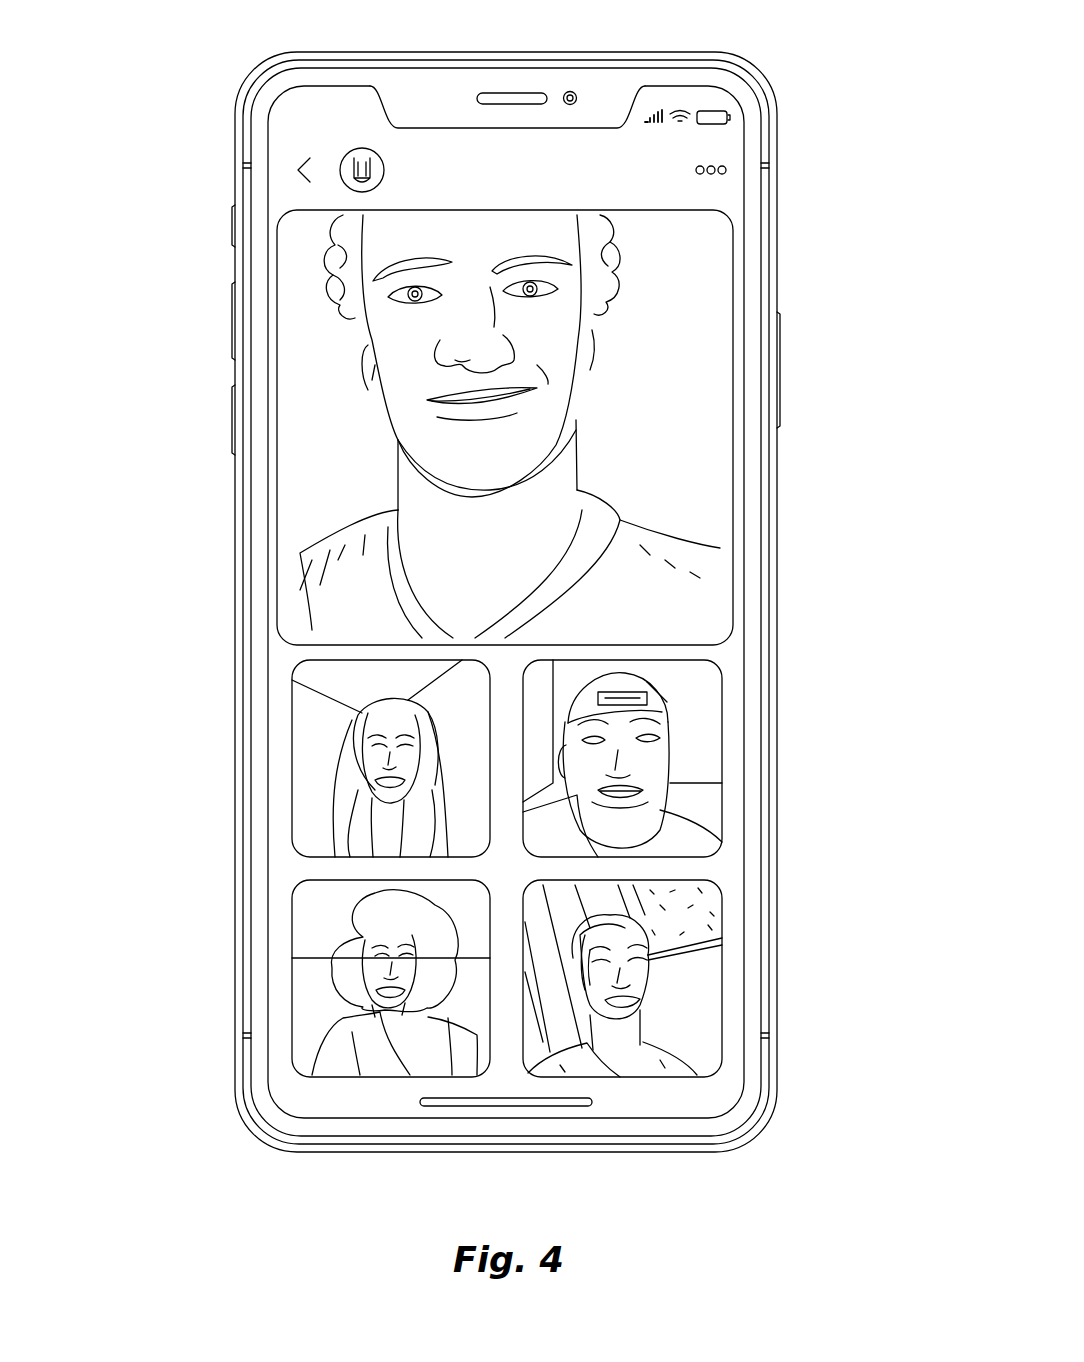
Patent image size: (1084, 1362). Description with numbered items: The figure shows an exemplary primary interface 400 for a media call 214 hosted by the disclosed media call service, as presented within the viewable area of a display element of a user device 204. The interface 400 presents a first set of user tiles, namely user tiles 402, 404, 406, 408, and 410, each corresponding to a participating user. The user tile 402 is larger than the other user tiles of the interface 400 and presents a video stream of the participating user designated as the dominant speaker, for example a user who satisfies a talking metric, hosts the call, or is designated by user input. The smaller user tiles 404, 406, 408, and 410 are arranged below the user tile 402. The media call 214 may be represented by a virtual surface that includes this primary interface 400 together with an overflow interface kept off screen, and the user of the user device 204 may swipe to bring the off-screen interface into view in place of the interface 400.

The user device 204 is at (230, 97).
The media call 214 is at (205, 377).
The interface 400 is at (260, 664).
The user tile 402 is at (697, 344).
The user tile 404 is at (312, 770).
The user tile 406 is at (695, 722).
The user tile 408 is at (312, 985).
The user tile 410 is at (695, 977).